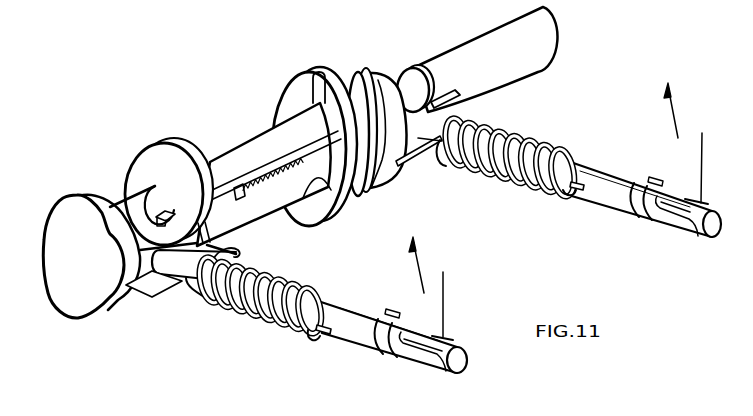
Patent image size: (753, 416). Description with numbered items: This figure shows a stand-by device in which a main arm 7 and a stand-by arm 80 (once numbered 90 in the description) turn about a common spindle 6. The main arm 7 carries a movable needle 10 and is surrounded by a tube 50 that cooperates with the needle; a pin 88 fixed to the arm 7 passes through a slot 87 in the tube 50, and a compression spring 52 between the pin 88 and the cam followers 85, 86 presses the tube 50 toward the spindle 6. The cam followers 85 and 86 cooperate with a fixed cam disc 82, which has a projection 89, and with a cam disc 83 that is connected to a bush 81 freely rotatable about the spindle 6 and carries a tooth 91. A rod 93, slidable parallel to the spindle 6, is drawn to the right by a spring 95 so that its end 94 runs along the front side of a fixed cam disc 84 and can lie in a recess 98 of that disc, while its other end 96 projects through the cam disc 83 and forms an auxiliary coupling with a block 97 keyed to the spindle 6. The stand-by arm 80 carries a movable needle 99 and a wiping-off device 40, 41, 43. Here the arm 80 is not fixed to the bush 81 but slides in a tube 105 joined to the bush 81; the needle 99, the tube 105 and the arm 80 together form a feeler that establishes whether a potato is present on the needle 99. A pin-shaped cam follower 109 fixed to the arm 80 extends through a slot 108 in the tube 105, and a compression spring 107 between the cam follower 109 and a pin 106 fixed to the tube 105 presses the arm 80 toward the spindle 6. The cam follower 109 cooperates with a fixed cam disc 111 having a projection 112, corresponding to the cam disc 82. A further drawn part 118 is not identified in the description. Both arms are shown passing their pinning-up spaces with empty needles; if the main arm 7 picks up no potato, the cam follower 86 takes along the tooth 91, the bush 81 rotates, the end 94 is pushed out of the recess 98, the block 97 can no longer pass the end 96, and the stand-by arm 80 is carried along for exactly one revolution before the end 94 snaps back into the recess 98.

The spindle 6 is at (517, 36).
The arm 7 is at (468, 362).
The movable needle 10 is at (447, 306).
The wiping-off device 40 is at (370, 313).
The wiping-off device 41 is at (392, 316).
The wiping-off device 43 is at (352, 305).
The tube 50 is at (415, 358).
The compression spring 52 is at (235, 311).
The stand-by arm 80 is at (716, 237).
The bush 81 is at (396, 74).
The cam disc 82 is at (80, 195).
The cam disc 83 is at (183, 133).
The cam disc 84 is at (314, 72).
The cam follower 85 is at (157, 290).
The cam follower 86 is at (239, 254).
The slot 87 is at (325, 340).
The pin 88 is at (312, 339).
The projection 89 is at (113, 300).
The stand-by arm 90 is at (531, 188).
The tooth 91 is at (207, 166).
The rod 93 is at (240, 188).
The end 94 is at (355, 198).
The spring 95 is at (270, 177).
The end 96 is at (153, 218).
The block 97 is at (157, 217).
The recess 98 is at (357, 73).
The needle 99 is at (701, 161).
The tube 105 is at (597, 197).
The pin 106 is at (561, 195).
The compression spring 107 is at (521, 189).
The slot 108 is at (446, 167).
The cam follower 109 is at (404, 161).
The cam disc 111 is at (371, 74).
The projection 112 is at (426, 67).
The tab 118 is at (448, 92).